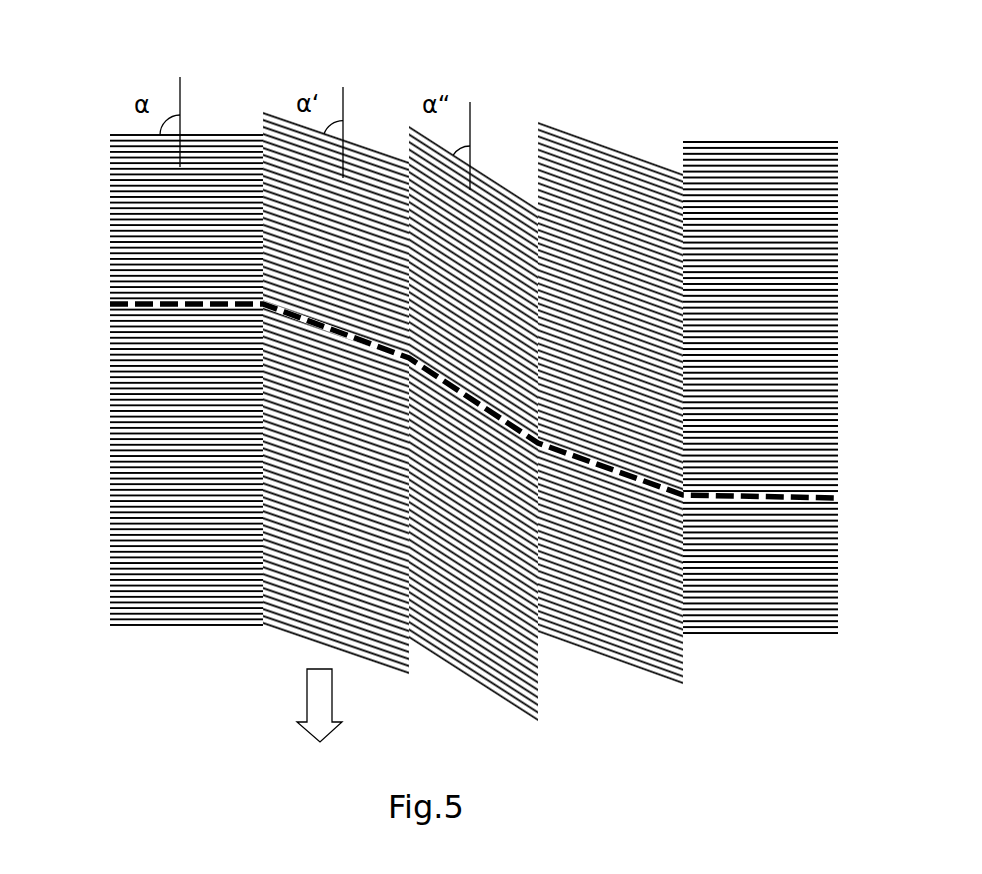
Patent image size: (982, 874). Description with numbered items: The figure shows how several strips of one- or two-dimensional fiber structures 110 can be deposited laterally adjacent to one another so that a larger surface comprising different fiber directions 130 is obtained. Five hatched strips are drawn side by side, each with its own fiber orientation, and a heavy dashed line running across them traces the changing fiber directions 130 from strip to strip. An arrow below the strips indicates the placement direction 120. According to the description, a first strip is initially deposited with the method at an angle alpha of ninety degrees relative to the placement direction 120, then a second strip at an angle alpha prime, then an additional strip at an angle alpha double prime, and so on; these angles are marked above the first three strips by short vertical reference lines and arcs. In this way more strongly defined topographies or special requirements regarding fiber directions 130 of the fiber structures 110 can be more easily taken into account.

The one or two-dimensional fiber structures 110 is at (612, 155).
The placement direction 120 is at (307, 693).
The fiber directions 130 is at (160, 305).